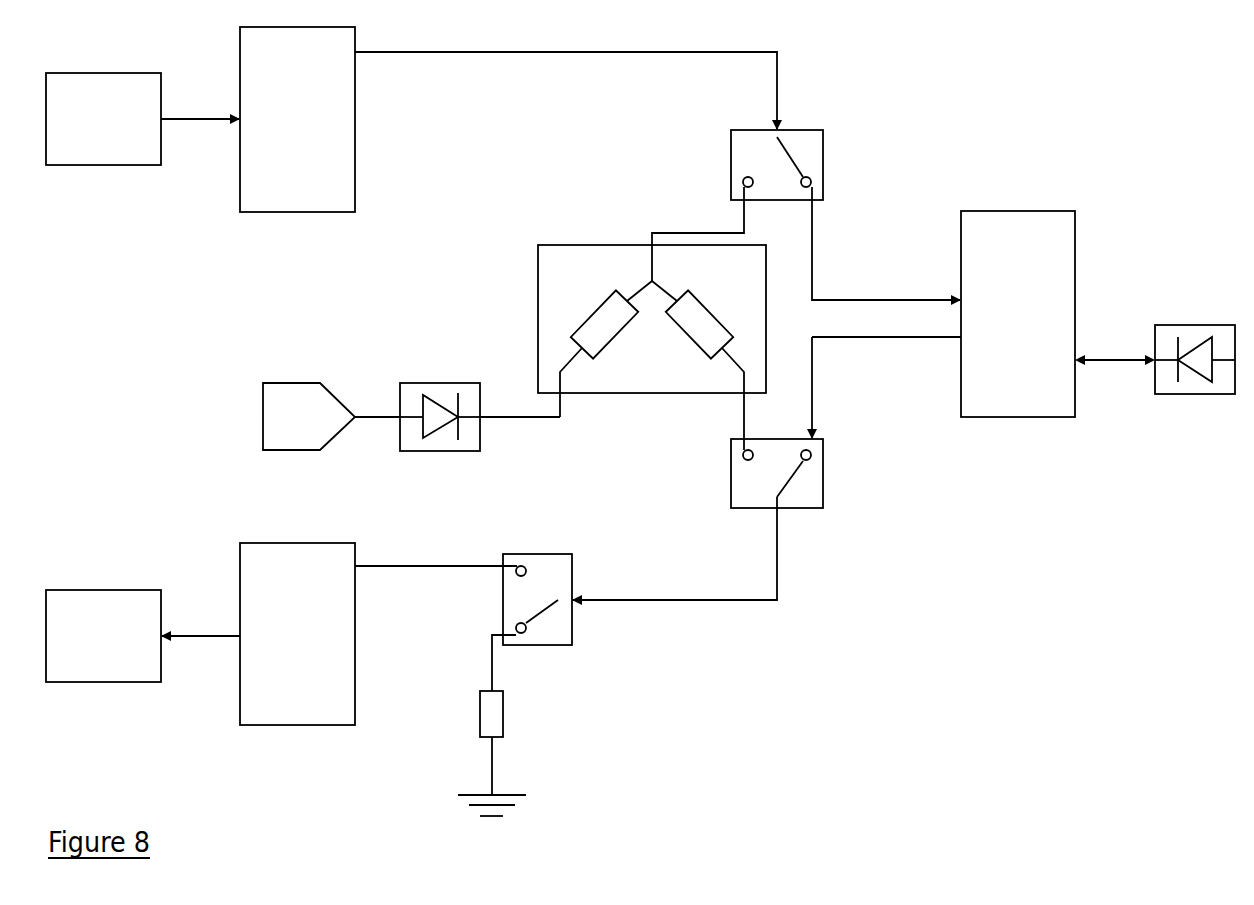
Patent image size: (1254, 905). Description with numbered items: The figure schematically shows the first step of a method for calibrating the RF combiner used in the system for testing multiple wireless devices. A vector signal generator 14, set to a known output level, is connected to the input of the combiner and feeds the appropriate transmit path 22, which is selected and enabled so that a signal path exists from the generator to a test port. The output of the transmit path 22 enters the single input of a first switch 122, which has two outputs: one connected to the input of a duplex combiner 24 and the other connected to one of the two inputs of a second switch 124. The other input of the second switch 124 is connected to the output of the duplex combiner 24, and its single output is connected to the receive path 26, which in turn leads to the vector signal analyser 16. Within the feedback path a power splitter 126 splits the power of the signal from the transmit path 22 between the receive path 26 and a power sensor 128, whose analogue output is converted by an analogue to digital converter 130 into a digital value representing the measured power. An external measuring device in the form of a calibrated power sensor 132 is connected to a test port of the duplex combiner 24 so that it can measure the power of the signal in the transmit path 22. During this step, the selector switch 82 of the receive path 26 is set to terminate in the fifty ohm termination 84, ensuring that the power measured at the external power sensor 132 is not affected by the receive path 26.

The vector signal generator 14 is at (68, 155).
The transmit path 22 is at (251, 49).
The first switch 122 is at (742, 150).
The duplex combiner 24 is at (972, 224).
The calibrated power sensor 132 is at (1190, 382).
The power splitter 126 is at (675, 383).
The analogue to digital converter 130 is at (297, 438).
The power sensor 128 is at (412, 438).
The second switch 124 is at (742, 486).
The receive path 26 is at (251, 564).
The vector signal analyser 16 is at (68, 672).
The selector switch 82 is at (561, 636).
The 50 ohm termination 84 is at (492, 723).